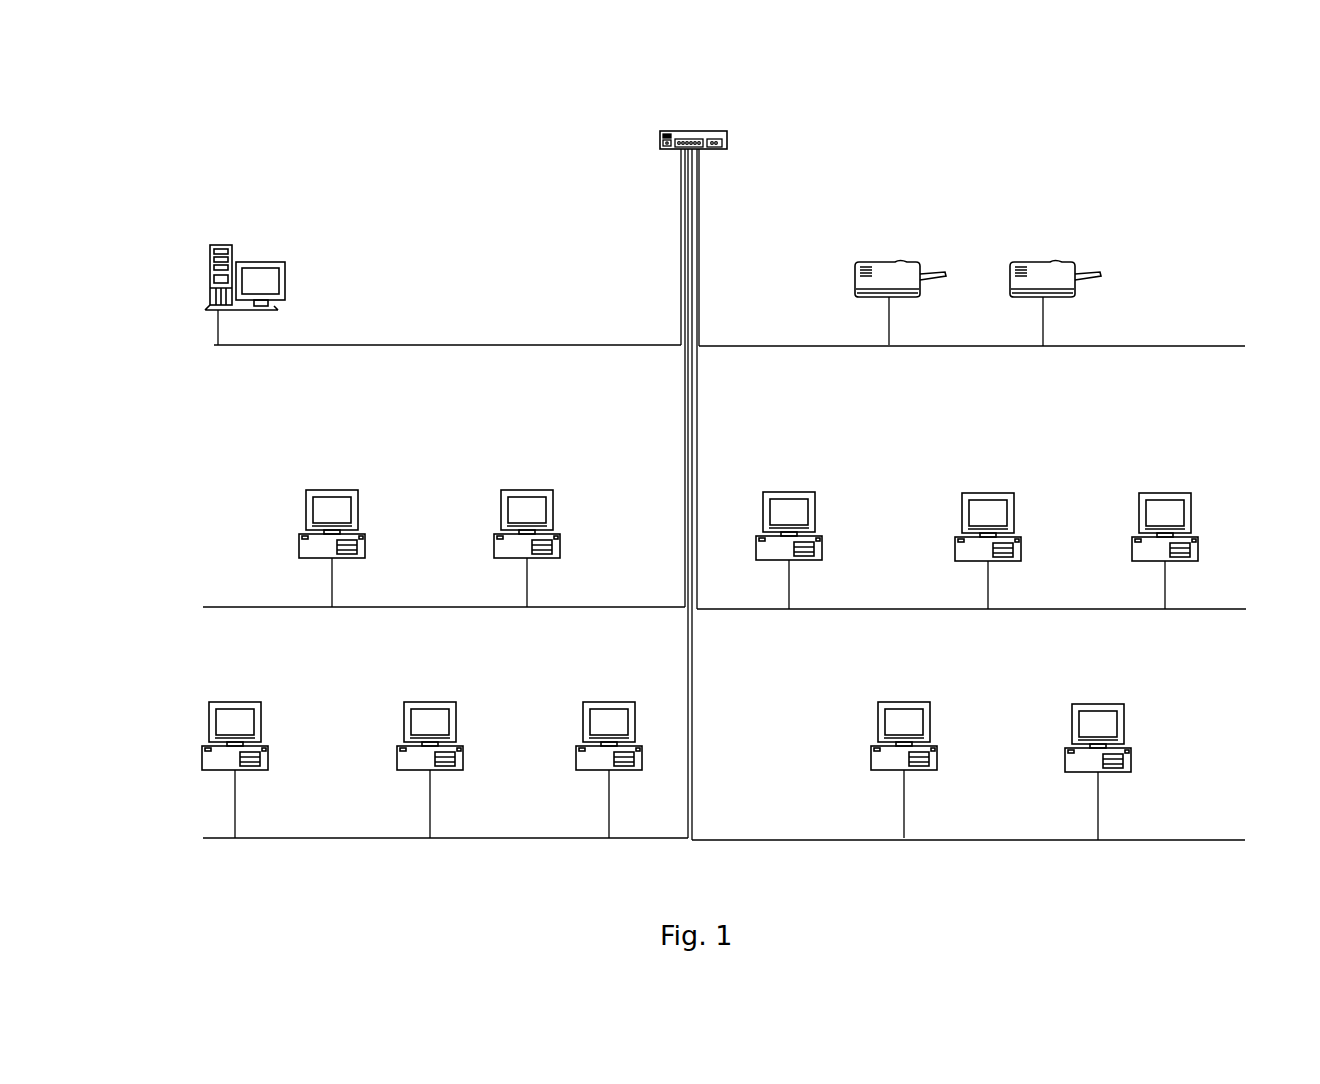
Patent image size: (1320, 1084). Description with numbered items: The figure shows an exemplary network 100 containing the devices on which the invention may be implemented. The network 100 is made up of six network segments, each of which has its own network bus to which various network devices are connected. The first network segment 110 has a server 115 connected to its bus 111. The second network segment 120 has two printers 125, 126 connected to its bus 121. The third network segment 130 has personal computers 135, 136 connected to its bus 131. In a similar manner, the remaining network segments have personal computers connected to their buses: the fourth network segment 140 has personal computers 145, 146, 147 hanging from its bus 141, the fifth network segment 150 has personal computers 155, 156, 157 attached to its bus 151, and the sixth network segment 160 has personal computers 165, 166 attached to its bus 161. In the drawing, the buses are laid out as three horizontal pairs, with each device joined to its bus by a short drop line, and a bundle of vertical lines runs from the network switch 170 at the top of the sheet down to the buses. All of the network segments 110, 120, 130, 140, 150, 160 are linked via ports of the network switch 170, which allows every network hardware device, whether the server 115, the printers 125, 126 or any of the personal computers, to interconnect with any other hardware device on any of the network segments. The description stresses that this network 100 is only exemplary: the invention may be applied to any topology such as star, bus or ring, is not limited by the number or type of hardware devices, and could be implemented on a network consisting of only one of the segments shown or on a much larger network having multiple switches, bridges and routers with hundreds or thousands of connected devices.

The network 100 is at (543, 212).
The network segment 110 is at (118, 326).
The network bus 111 is at (438, 344).
The server 115 is at (220, 245).
The network segment 120 is at (1280, 326).
The network bus 121 is at (779, 346).
The printer 125 is at (893, 263).
The printer 126 is at (1050, 263).
The network segment 130 is at (129, 593).
The network bus 131 is at (236, 607).
The personal computer 135 is at (348, 490).
The personal computer 136 is at (542, 490).
The network segment 140 is at (1275, 582).
The network bus 141 is at (1070, 609).
The personal computer 145 is at (806, 467).
The personal computer 146 is at (1005, 470).
The personal computer 147 is at (1182, 466).
The network segment 150 is at (128, 843).
The network bus 151 is at (338, 838).
The personal computer 155 is at (247, 704).
The personal computer 156 is at (442, 704).
The personal computer 157 is at (618, 704).
The network segment 160 is at (1270, 812).
The network bus 161 is at (1180, 807).
The personal computer 165 is at (916, 678).
The personal computer 166 is at (1112, 682).
The network switch 170 is at (693, 131).